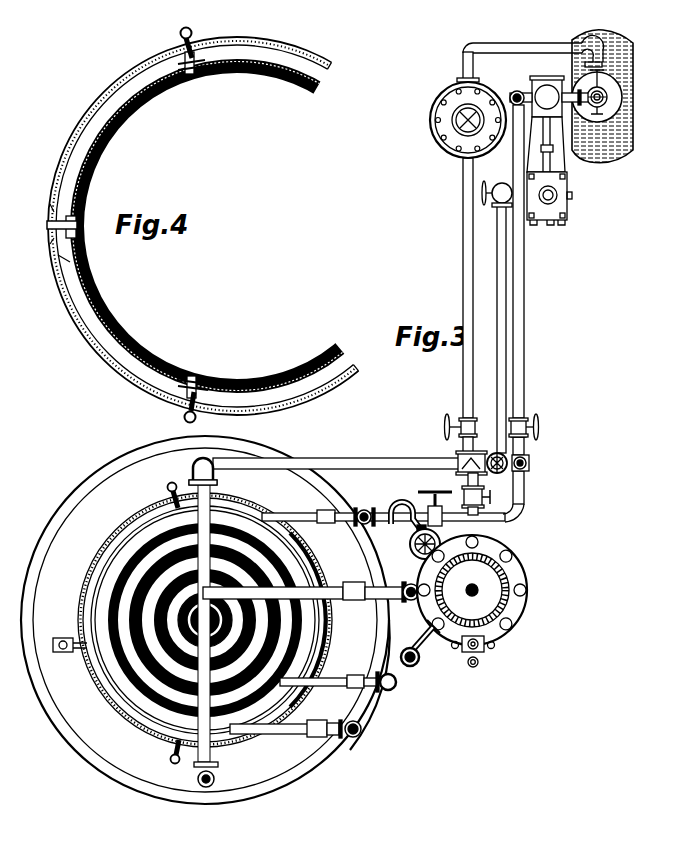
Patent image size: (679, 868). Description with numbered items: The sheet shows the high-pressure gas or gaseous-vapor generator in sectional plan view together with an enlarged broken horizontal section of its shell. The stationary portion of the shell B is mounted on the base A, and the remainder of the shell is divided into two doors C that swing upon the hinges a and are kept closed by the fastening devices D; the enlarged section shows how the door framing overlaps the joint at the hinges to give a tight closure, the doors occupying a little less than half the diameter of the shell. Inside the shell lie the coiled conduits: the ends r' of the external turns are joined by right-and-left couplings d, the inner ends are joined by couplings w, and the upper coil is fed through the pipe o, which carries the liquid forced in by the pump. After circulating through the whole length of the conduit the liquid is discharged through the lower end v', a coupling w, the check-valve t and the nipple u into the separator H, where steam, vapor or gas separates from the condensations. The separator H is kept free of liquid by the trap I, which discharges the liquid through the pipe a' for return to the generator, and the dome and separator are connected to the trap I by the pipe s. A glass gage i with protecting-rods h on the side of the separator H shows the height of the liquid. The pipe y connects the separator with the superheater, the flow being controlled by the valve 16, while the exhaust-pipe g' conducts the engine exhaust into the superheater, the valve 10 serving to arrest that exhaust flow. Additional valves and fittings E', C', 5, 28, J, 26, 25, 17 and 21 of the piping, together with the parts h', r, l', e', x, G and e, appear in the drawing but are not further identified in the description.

In FIG. 3, the trap I is at (457, 120).
In FIG. 3, the pipe a' is at (527, 226).
In FIG. 3, the valve E' is at (549, 88).
In FIG. 3, the shell B is at (481, 403).
In FIG. 3, the cock C' is at (600, 96).
In FIG. 3, the nozzle 5 is at (600, 105).
In FIG. 3, the pipe o is at (521, 313).
In FIG. 3, the valve 28 is at (497, 194).
In FIG. 3, the pump J is at (549, 171).
In FIG. 3, the exhaust-pipe g' is at (500, 376).
In FIG. 3, the valve 26 is at (449, 433).
In FIG. 3, the valve 25 is at (531, 427).
In FIG. 3, the valve 16 is at (481, 457).
In FIG. 3, the valve 17 is at (492, 496).
In FIG. 3, the valve 21 is at (435, 503).
In FIG. 3, the pipe h' is at (420, 505).
In FIG. 3, the pipe y is at (410, 539).
In FIG. 3, the valve 10 is at (431, 543).
In FIG. 3, the separator H is at (472, 590).
In FIG. 3, the right-and-left coupling w is at (354, 591).
In FIG. 3, the pipe r is at (384, 584).
In FIG. 3, the lower end of conduit v' is at (273, 594).
In FIG. 3, the check-valve t is at (410, 601).
In FIG. 3, the nipple u is at (418, 605).
In FIG. 3, the pipe s is at (420, 643).
In FIG. 3, the glass gage i is at (472, 651).
In FIG. 3, the protecting-rods h is at (477, 662).
In FIG. 4, the hinge a is at (184, 221).
In FIG. 3, the hinge a is at (173, 629).
In FIG. 3, the fitting l' is at (214, 625).
In FIG. 3, the fitting e' is at (210, 774).
In FIG. 3, the ring x is at (205, 619).
In FIG. 4, the door C is at (237, 226).
In FIG. 3, the door C is at (201, 620).
In FIG. 3, the fastening device D is at (70, 654).
In FIG. 3, the casing ring G is at (219, 620).
In FIG. 3, the base A is at (205, 620).
In FIG. 3, the end of external coil turn r' is at (269, 729).
In FIG. 3, the right-and-left coupling d is at (317, 728).
In FIG. 3, the coupling e is at (344, 729).